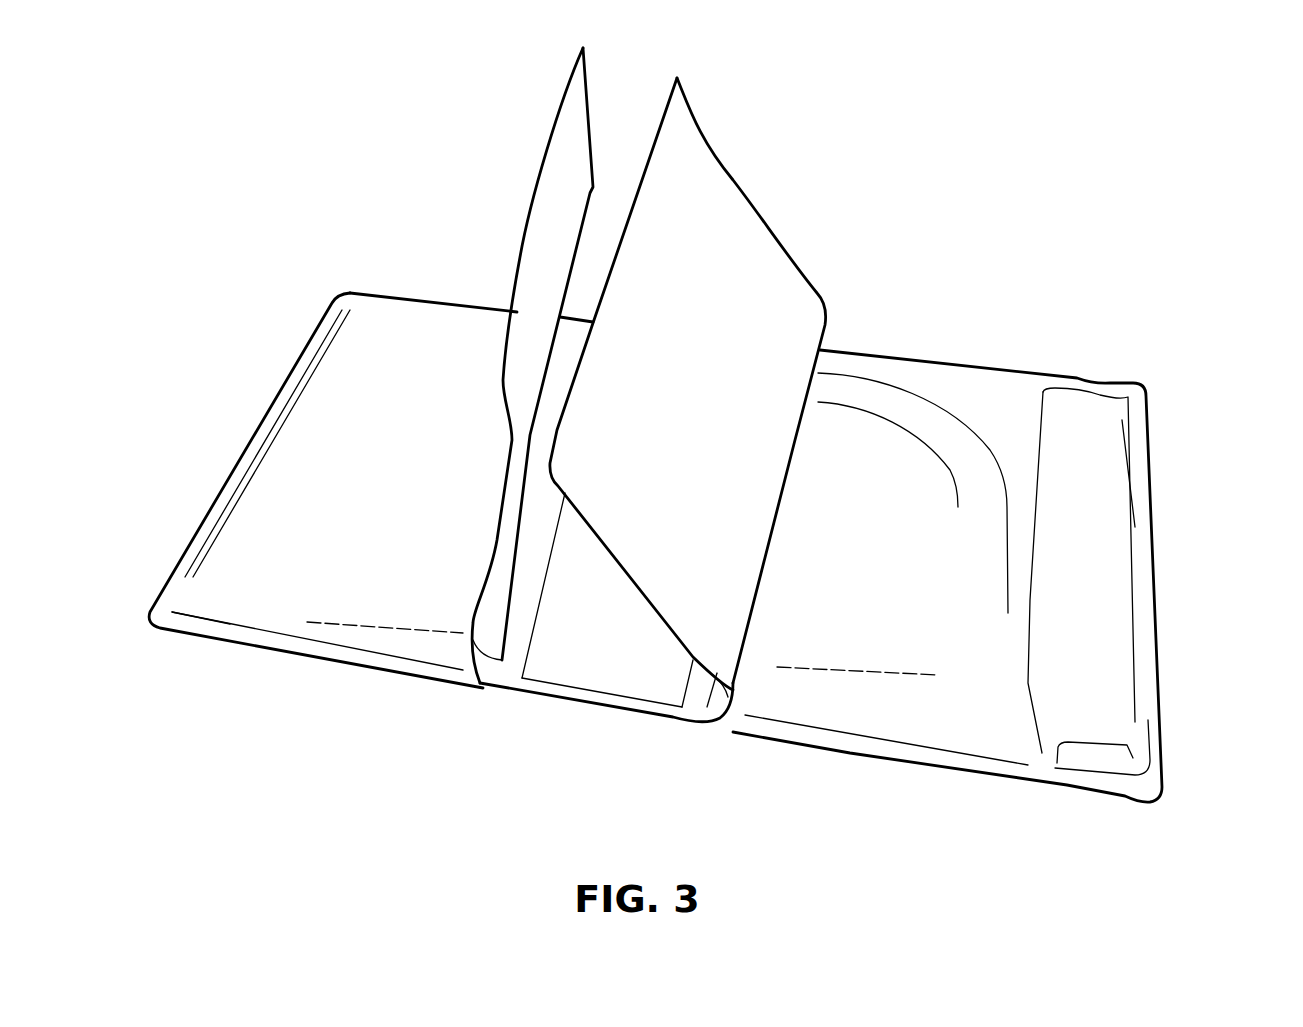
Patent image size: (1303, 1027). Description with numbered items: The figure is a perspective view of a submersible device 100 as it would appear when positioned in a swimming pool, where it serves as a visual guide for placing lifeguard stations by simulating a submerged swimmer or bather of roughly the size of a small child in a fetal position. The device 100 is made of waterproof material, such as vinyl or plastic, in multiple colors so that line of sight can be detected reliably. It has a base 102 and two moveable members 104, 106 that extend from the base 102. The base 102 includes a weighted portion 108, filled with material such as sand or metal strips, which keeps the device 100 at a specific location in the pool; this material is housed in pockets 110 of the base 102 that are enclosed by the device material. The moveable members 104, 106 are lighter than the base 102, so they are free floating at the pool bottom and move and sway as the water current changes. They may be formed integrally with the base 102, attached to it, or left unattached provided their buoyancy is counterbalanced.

The submersible device 100 is at (1005, 220).
The base 102 is at (743, 727).
The moveable member 104 is at (778, 242).
The moveable member 106 is at (517, 260).
The weighted portion 108 is at (267, 547).
The pockets 110 is at (238, 607).